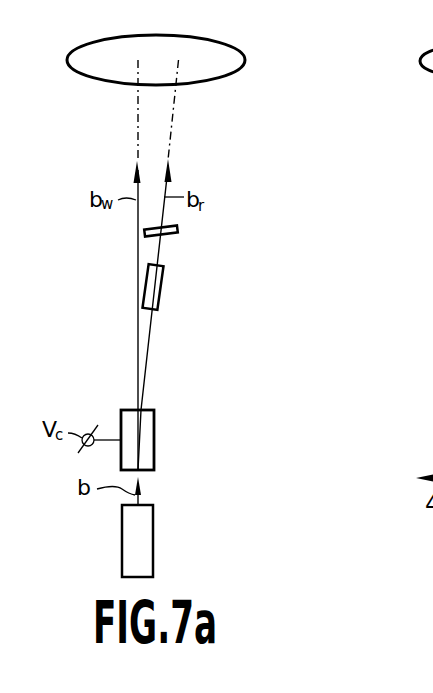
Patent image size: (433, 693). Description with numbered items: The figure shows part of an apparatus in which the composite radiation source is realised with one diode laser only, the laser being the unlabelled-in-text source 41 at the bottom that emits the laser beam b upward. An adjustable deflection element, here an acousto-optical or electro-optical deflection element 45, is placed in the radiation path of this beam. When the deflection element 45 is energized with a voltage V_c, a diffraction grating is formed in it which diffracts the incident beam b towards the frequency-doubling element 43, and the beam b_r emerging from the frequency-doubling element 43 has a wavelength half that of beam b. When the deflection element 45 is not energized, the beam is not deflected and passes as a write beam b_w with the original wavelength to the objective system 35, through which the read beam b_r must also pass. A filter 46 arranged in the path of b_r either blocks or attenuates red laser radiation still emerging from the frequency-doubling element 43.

The objective system 35 is at (232, 60).
The light source 41 is at (140, 542).
The frequency-doubling element 43 is at (163, 290).
The acousto-optical or electro-optical deflection element 45 is at (150, 438).
The filter 46 is at (179, 233).